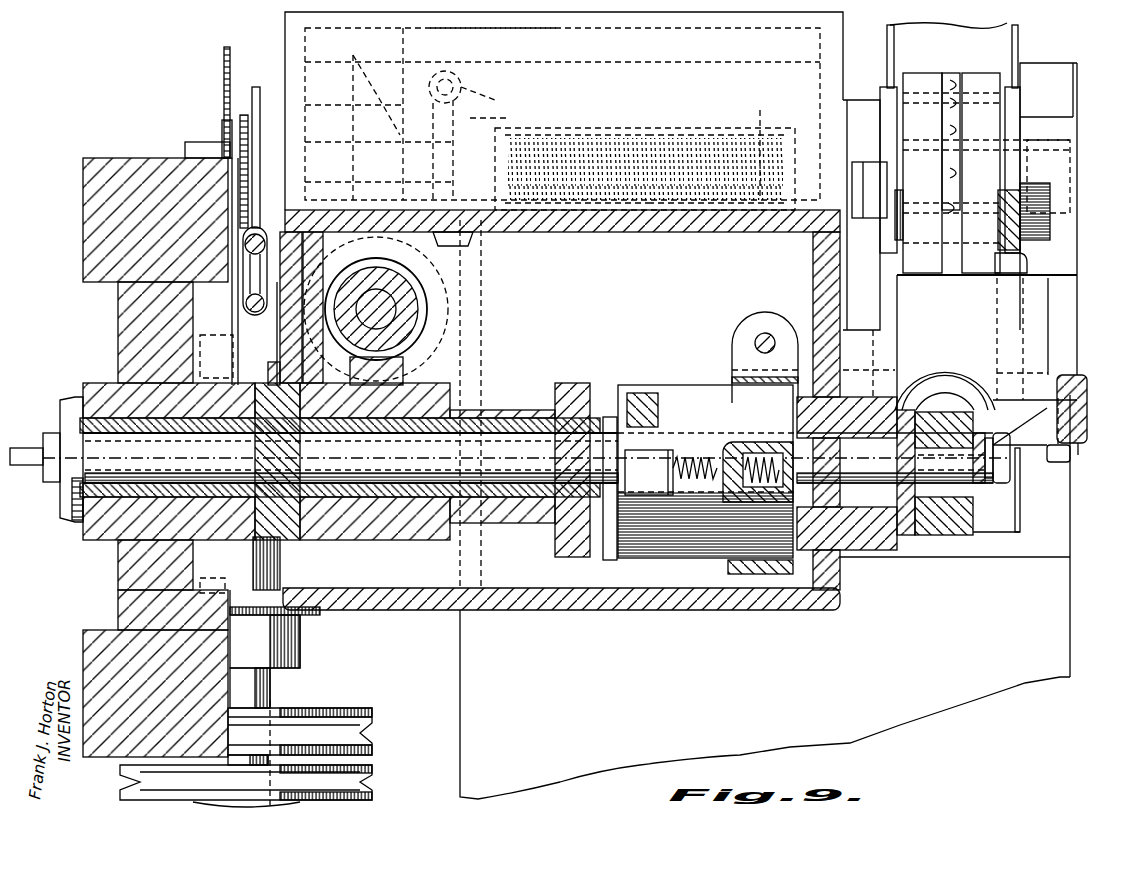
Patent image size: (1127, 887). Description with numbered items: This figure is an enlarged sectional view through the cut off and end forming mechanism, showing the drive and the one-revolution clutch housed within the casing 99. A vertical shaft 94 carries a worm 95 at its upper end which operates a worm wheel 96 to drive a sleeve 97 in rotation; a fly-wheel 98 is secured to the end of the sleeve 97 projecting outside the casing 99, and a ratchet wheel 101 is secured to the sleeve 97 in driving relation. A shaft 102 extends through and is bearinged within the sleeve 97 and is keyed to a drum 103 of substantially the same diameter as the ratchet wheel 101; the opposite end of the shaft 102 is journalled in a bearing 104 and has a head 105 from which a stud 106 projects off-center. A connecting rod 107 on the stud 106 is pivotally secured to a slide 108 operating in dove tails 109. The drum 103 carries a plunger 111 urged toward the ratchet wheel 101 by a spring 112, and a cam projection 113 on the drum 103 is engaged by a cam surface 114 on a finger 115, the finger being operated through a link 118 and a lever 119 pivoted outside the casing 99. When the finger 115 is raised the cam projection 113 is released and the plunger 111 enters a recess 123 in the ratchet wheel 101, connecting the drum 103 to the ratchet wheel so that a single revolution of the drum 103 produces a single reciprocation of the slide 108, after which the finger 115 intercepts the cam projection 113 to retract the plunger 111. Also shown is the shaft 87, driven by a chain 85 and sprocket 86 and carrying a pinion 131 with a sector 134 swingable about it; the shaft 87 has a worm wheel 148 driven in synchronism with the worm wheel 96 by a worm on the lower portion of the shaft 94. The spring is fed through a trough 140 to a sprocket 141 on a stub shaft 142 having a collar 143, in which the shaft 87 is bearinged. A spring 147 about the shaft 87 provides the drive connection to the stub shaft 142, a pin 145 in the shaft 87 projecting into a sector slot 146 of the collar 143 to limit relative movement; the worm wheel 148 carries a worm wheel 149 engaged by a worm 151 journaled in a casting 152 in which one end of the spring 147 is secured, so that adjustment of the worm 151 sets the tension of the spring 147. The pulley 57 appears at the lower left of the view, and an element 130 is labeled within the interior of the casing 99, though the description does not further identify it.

The pulley 57 is at (366, 724).
The chain 85 is at (222, 66).
The sprocket 86 is at (225, 128).
The shaft 87 is at (365, 95).
The vertical shaft 94 is at (395, 305).
The worm 95 is at (412, 322).
The worm wheel 96 is at (402, 392).
The sleeve 97 is at (520, 500).
The fly-wheel 98 is at (150, 670).
The casing 99 is at (385, 610).
The ratchet wheel 101 is at (603, 580).
The shaft 102 is at (525, 468).
The drum 103 is at (700, 580).
The bearing 104 is at (860, 522).
The head 105 is at (912, 537).
The stud 106 is at (951, 462).
The connecting rod 107 is at (950, 535).
The slide 108 is at (1022, 510).
The dove tails 109 is at (903, 394).
The plunger 111 is at (620, 495).
The spring 112 is at (752, 495).
The cam projection 113 is at (665, 460).
The cam surface 114 is at (660, 480).
The finger 115 is at (645, 400).
The link 118 is at (272, 262).
The lever 119 is at (238, 340).
The recess 123 is at (608, 420).
The housing 130 is at (549, 301).
The pinion 131 is at (240, 118).
The sector 134 is at (258, 85).
The trough 140 is at (1003, 40).
The sprocket 141 is at (950, 200).
The stub shaft 142 is at (1075, 150).
The collar 143 is at (760, 120).
The pin 145 is at (770, 132).
The sector slot 146 is at (752, 102).
The spring 147 is at (640, 130).
The worm wheel 148 is at (428, 70).
The worm wheel 149 is at (482, 98).
The worm 151 is at (515, 28).
The casting 152 is at (510, 120).